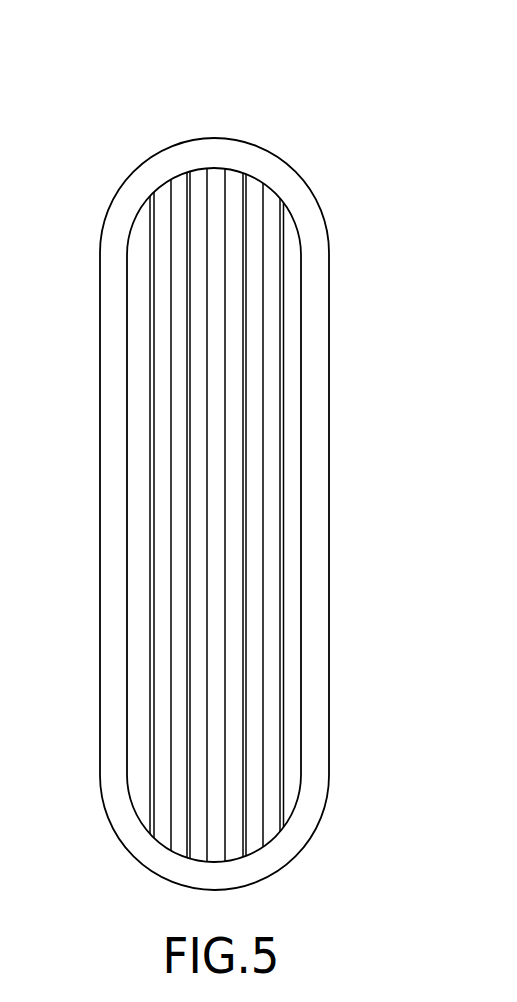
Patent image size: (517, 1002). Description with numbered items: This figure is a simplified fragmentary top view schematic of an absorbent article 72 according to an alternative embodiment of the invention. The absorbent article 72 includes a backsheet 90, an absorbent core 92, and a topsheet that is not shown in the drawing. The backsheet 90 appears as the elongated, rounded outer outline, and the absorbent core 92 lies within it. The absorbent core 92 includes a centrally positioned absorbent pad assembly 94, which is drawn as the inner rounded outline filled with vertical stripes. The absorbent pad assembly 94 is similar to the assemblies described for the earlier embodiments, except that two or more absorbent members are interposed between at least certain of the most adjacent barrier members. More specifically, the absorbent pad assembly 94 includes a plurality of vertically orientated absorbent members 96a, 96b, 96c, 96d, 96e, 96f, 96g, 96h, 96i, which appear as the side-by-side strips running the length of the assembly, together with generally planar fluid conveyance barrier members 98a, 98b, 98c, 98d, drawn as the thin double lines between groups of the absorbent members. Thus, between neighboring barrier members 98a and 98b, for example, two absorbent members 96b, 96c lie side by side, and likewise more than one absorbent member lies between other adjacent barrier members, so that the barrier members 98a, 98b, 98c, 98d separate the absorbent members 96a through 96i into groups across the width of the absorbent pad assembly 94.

The absorbent article 72 is at (339, 109).
The backsheet 90 is at (134, 185).
The absorbent core 92 is at (160, 852).
The absorbent pad assembly 94 is at (313, 269).
The absorbent member 96a is at (147, 775).
The absorbent member 96b is at (163, 674).
The absorbent member 96c is at (175, 606).
The absorbent member 96d is at (200, 494).
The absorbent member 96e is at (212, 192).
The absorbent member 96f is at (232, 500).
The absorbent member 96g is at (253, 607).
The absorbent member 96h is at (272, 673).
The absorbent member 96i is at (295, 767).
The fluid conveyance barrier member 98a is at (152, 720).
The fluid conveyance barrier member 98b is at (187, 546).
The fluid conveyance barrier member 98c is at (245, 552).
The fluid conveyance barrier member 98d is at (283, 720).